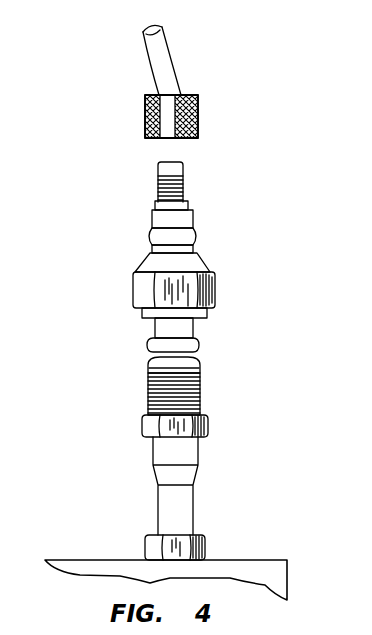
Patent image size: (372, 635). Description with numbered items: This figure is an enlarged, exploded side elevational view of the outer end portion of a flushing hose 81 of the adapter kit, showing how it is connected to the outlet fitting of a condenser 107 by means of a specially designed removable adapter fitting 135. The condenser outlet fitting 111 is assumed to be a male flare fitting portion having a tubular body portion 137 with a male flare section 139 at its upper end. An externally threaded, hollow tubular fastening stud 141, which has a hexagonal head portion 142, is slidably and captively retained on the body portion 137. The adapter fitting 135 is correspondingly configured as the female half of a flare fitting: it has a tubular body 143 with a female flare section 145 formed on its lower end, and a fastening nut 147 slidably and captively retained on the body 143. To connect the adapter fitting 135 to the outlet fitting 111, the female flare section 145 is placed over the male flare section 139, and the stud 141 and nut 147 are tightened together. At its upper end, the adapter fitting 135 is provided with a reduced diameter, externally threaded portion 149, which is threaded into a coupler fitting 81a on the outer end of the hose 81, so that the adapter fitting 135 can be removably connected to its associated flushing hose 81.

The flushing hose 81 is at (178, 72).
The coupler fitting 81a is at (198, 118).
The externally threaded portion 149 is at (183, 187).
The adapter fitting 135 is at (156, 235).
The fastening nut 147 is at (215, 295).
The tubular body 143 is at (143, 324).
The female flare section 145 is at (147, 343).
The male flare section 139 is at (165, 366).
The tubular body portion 137 is at (148, 370).
The fastening stud 141 is at (200, 398).
The hexagonal head portion 142 is at (208, 430).
The condenser outlet fitting 111 is at (150, 452).
The condenser 107 is at (289, 580).